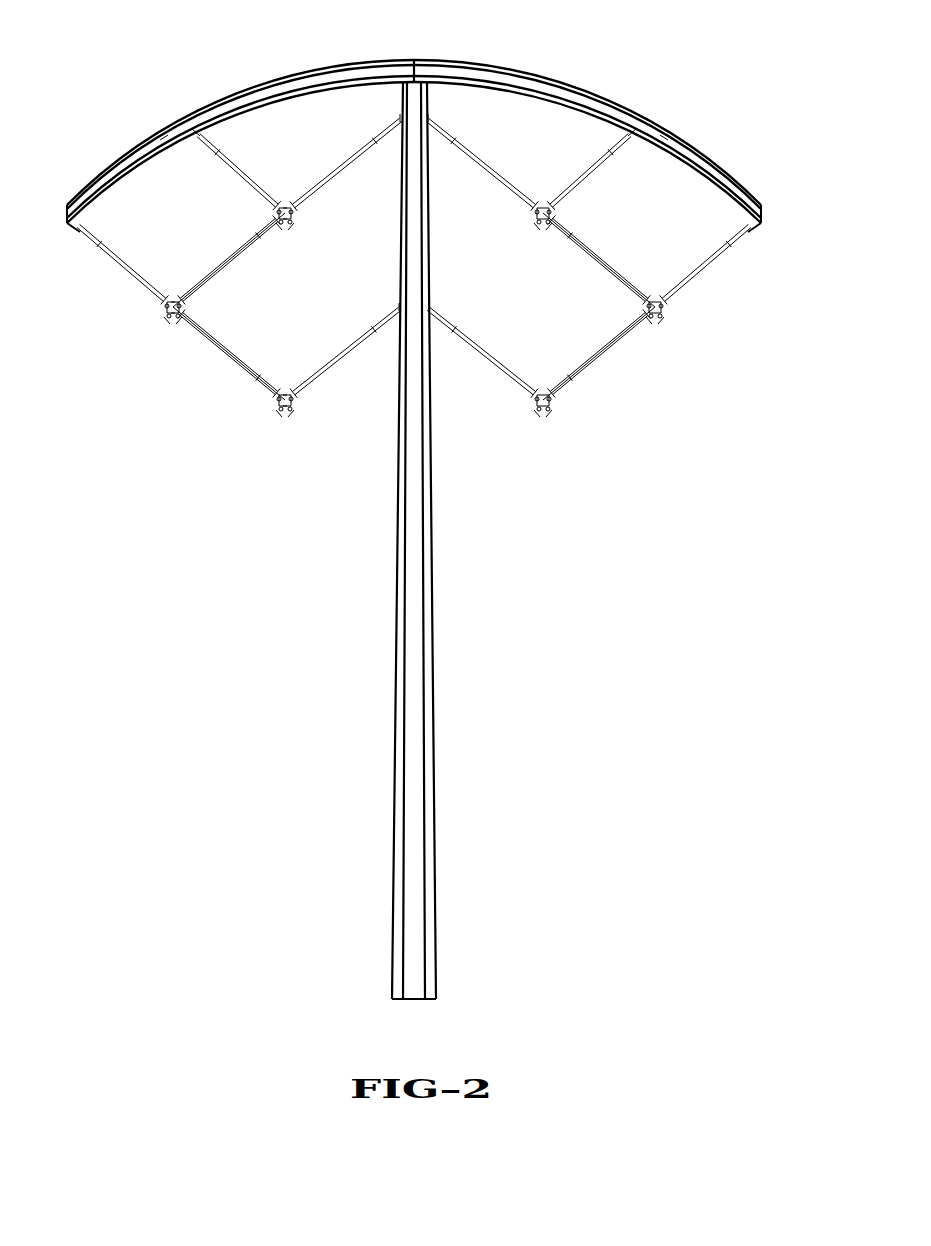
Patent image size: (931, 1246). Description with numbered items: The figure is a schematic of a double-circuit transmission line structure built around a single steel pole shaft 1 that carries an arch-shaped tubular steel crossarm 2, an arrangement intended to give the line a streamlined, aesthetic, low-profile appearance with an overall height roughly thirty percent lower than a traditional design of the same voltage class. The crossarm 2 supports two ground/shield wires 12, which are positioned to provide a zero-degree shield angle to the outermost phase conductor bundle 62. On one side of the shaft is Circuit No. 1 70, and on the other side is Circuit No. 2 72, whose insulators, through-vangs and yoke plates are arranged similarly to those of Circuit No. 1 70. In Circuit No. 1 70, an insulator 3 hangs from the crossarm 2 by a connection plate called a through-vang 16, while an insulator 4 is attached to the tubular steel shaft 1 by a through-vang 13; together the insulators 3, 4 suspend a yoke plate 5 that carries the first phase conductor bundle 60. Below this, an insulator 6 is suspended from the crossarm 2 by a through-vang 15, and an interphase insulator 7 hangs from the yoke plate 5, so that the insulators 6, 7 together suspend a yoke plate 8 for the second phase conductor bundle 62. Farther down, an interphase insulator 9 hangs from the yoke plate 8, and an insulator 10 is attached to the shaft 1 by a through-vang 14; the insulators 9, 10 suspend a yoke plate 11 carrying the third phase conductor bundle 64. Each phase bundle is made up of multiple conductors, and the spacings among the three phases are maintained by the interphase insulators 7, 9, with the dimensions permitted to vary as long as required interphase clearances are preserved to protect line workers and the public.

The steel pole shaft 1 is at (415, 750).
The arch-shaped tubular steel crossarm 2 is at (515, 80).
The insulator 3 is at (249, 178).
The insulator 4 is at (338, 167).
The yoke plate 5 is at (291, 221).
The insulator 6 is at (115, 261).
The insulator 7 is at (231, 258).
The yoke plate 8 is at (168, 320).
The insulator 9 is at (228, 352).
The insulator 10 is at (338, 362).
The yoke plate 11 is at (292, 410).
The ground/shield wire 12 is at (177, 120).
The through-vang 13 is at (400, 117).
The through-vang 14 is at (400, 305).
The through-vang 15 is at (67, 220).
The through-vang 16 is at (196, 135).
The first phase conductor bundle 60 is at (283, 238).
The second phase conductor bundle 62 is at (181, 326).
The third phase conductor bundle 64 is at (279, 427).
The Circuit No. 1 70 is at (203, 562).
The Circuit No. 2 72 is at (625, 562).